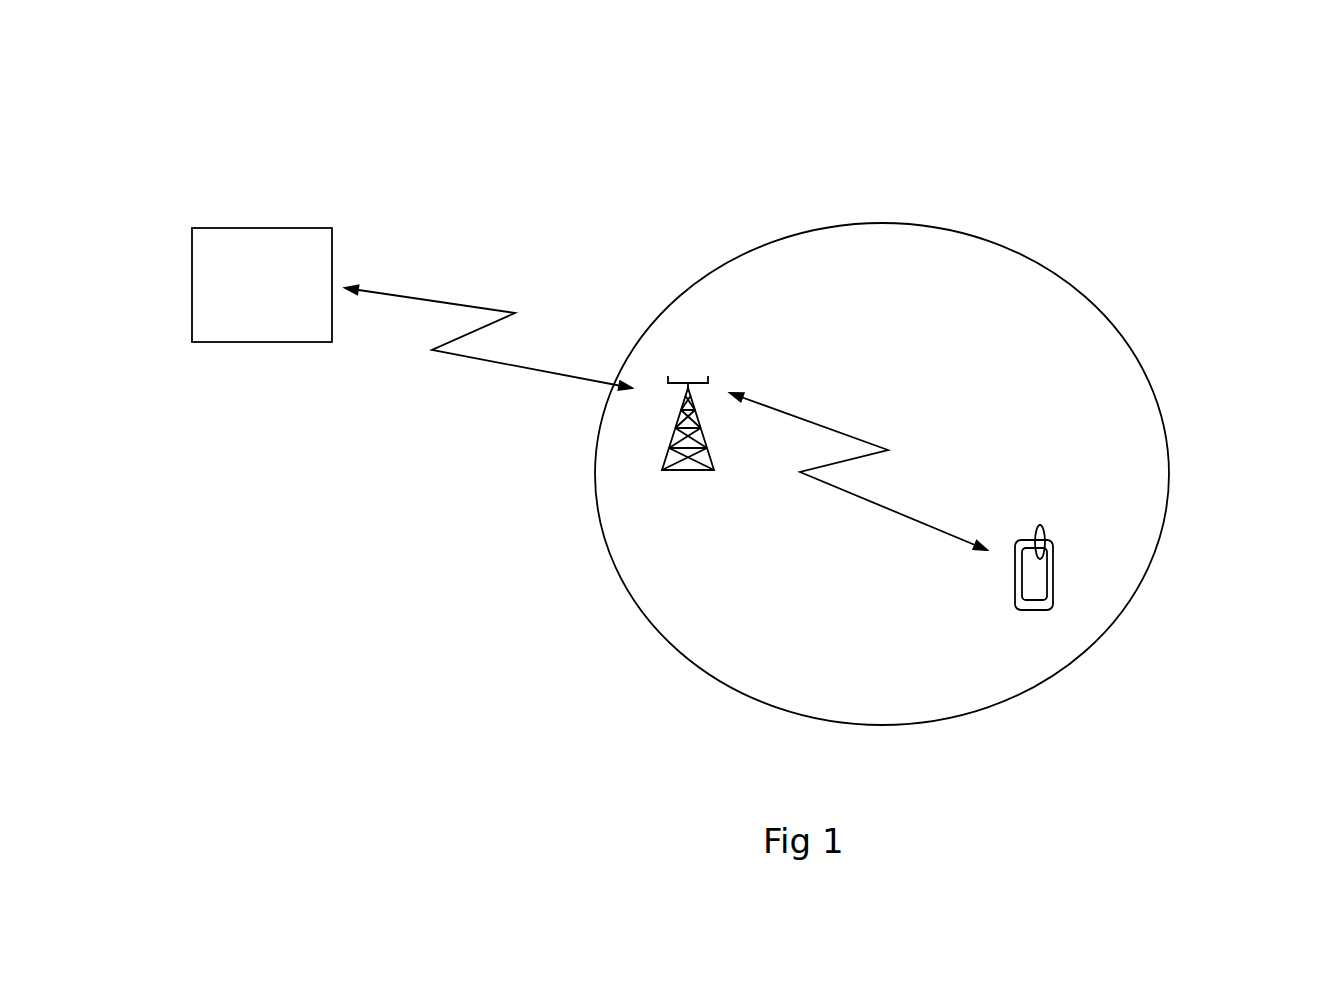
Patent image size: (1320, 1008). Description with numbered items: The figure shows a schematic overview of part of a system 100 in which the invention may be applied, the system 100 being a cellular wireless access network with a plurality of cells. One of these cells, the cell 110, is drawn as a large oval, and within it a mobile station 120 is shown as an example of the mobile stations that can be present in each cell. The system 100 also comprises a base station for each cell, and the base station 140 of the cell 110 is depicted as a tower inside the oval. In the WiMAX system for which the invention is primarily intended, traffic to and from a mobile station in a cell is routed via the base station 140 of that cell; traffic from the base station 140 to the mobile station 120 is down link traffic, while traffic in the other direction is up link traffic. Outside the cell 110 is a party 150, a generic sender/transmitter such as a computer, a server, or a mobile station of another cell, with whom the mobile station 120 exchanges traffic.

The system 100 is at (1193, 128).
The cell 110 is at (775, 230).
The mobile station 120 is at (1092, 613).
The base station 140 is at (682, 493).
The party 150 is at (223, 222).